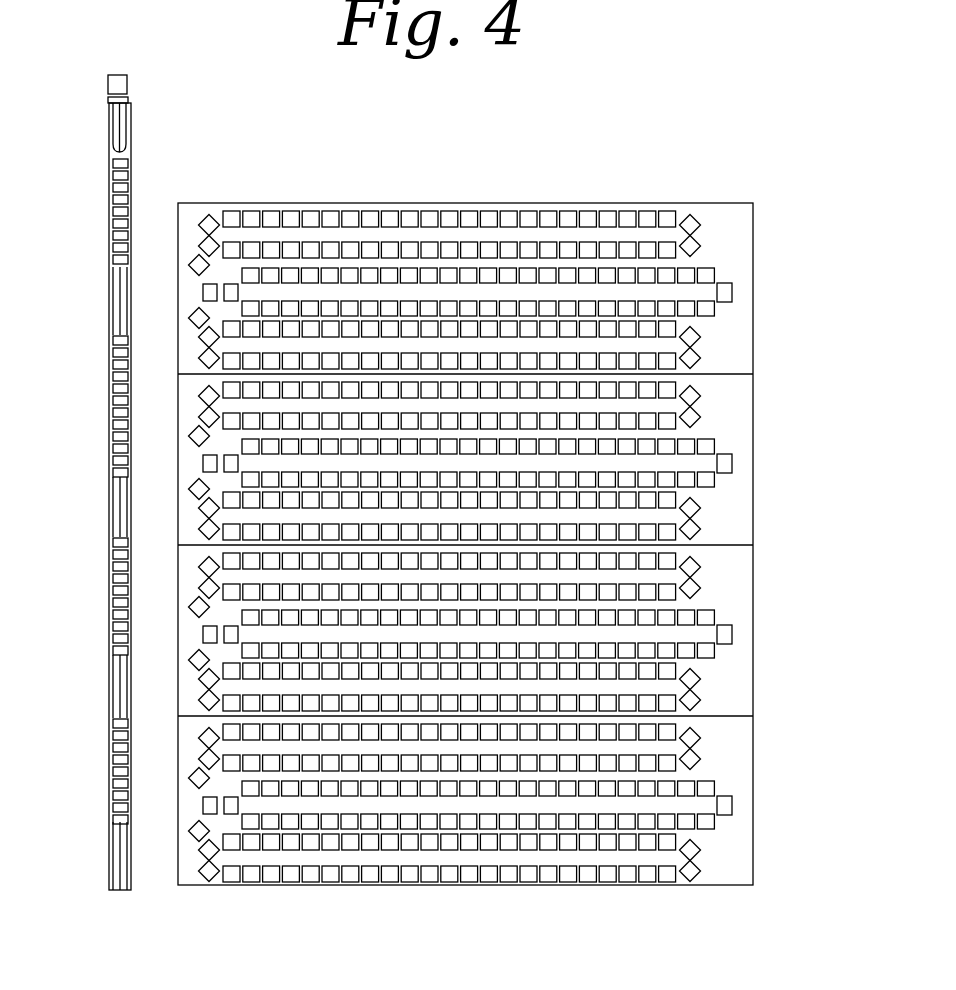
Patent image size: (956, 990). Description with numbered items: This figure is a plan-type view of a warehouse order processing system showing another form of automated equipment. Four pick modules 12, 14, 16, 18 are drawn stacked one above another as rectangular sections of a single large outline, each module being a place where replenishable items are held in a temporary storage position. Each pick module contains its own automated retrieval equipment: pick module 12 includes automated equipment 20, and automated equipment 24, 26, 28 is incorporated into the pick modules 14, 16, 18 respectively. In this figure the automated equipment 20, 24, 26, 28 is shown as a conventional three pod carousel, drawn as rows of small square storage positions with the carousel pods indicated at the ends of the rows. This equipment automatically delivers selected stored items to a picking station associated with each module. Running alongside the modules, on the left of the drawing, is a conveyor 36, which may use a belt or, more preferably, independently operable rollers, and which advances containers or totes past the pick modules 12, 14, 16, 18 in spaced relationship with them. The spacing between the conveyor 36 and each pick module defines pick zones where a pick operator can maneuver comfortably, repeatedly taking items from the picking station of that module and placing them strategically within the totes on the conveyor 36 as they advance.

The pick module 12 is at (690, 201).
The pick module 14 is at (758, 390).
The pick module 16 is at (758, 580).
The pick module 18 is at (758, 746).
The automated equipment 20 is at (694, 292).
The automated equipment 24 is at (694, 464).
The automated equipment 26 is at (694, 636).
The automated equipment 28 is at (694, 802).
The conveyor 36 is at (108, 839).